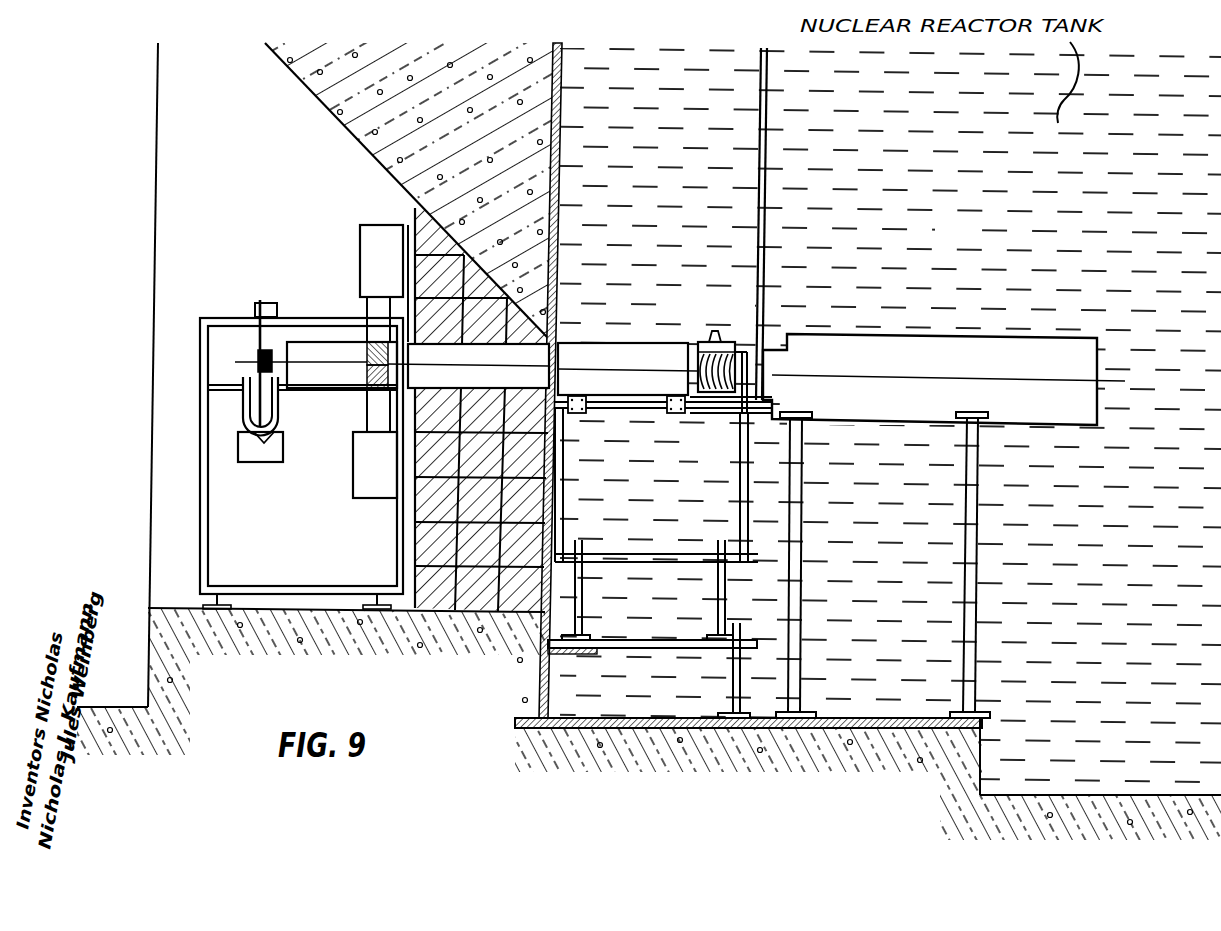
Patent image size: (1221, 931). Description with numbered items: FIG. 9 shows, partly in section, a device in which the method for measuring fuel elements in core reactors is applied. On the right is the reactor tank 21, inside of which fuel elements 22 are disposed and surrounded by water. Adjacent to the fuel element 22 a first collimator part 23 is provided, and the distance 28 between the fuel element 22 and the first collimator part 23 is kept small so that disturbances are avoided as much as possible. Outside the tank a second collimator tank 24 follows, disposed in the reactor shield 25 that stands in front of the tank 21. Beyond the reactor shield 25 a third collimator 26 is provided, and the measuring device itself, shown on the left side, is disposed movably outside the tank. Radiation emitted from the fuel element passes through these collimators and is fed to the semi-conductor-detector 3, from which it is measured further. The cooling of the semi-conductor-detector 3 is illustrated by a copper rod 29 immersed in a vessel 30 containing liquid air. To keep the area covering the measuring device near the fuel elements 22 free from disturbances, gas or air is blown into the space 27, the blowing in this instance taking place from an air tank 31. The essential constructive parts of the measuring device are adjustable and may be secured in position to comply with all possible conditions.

The semi-conductor-detector 3 is at (125, 356).
The reactor tank 21 is at (962, 238).
The fuel elements 22 is at (703, 341).
The first collimator part 23 is at (646, 369).
The second collimator tank 24 is at (531, 368).
The reactor shield 25 is at (498, 332).
The third collimator 26 is at (303, 278).
The space 27 is at (741, 352).
The distance 28 is at (689, 408).
The copper rod 29 is at (125, 398).
The vessel 30 is at (132, 430).
The air tank 31 is at (970, 369).